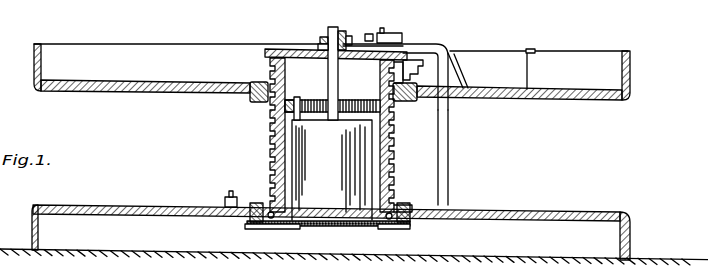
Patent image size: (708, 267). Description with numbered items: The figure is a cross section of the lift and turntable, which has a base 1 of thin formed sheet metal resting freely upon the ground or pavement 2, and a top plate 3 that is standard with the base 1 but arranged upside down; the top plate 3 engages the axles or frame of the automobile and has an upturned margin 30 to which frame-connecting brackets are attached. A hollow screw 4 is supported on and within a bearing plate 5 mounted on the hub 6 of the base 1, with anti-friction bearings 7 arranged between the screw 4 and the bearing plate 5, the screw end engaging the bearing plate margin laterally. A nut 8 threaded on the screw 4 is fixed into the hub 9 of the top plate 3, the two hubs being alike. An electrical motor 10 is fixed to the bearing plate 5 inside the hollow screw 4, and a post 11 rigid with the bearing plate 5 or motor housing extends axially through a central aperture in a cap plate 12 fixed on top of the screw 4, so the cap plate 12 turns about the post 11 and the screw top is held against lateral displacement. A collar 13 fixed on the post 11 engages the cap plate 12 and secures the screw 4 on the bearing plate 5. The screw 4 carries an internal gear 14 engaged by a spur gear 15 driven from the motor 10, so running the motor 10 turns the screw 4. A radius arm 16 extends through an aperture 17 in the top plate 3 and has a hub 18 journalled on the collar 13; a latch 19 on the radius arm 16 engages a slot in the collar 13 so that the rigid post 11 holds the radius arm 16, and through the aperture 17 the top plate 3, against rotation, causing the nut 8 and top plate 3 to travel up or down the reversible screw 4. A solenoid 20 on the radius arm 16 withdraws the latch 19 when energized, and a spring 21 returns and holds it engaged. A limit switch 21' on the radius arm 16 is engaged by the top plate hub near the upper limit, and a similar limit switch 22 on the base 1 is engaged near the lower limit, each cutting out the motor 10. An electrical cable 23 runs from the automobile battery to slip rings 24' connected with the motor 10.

The base 1 is at (535, 212).
The ground or pavement 2 is at (493, 255).
The top plate 3 is at (539, 99).
The hollow screw 4 is at (394, 155).
The bearing plate 5 is at (380, 223).
The hub 6 is at (409, 207).
The anti-friction bearings 7 is at (264, 223).
The nut 8 is at (396, 100).
The hub 9 is at (250, 96).
The electrical motor 10 is at (324, 221).
The post 11 is at (338, 74).
The cap plate 12 is at (297, 58).
The collar 13 is at (319, 37).
The internal gear 14 is at (357, 100).
The spur gear 15 is at (302, 100).
The radius arm 16 is at (449, 118).
The aperture 17 is at (418, 94).
The hub 18 is at (320, 42).
The latch 19 is at (350, 40).
The solenoid 20 is at (403, 41).
The spring 21 is at (383, 29).
The limit switch 21' is at (418, 70).
The limit switch 22 is at (224, 199).
The electrical cable 23 is at (528, 72).
The slip rings 24' is at (317, 33).
The upturned margin 30 is at (631, 73).